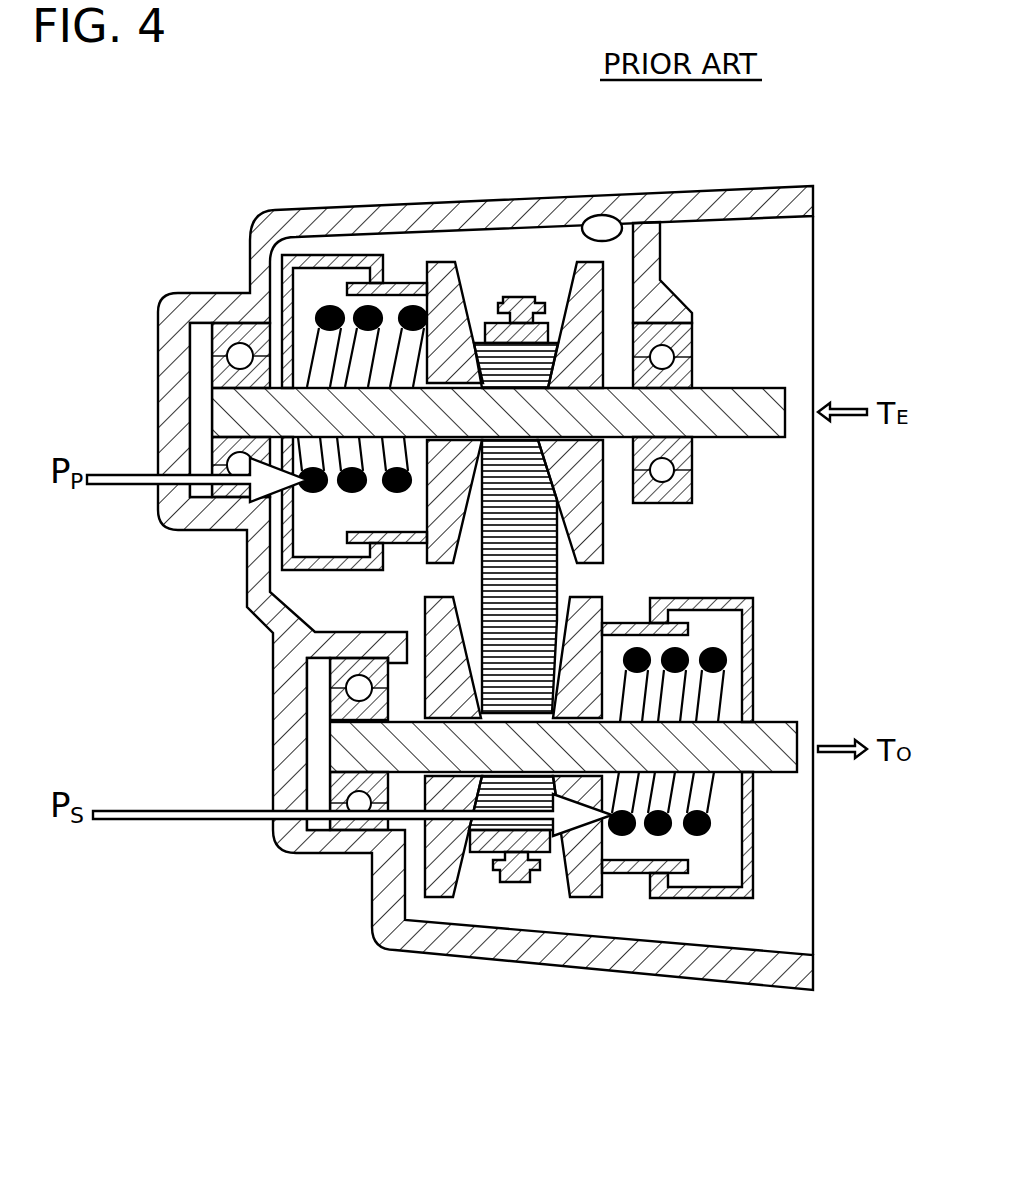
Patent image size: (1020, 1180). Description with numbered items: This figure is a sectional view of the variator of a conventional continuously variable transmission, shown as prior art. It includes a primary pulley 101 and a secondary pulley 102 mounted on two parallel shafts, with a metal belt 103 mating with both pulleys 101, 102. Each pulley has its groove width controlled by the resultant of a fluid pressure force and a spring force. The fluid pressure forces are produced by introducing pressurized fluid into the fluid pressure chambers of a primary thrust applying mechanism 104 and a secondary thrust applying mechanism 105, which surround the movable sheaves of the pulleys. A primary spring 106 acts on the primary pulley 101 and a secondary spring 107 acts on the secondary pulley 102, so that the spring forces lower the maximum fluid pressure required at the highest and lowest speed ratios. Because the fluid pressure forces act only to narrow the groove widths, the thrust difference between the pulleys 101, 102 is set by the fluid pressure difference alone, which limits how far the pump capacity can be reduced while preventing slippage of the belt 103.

The primary pulley 101 is at (470, 276).
The secondary pulley 102 is at (463, 897).
The metal belt 103 is at (538, 585).
The primary thrust applying mechanism 104 is at (334, 247).
The secondary thrust applying mechanism 105 is at (716, 906).
The primary spring 106 is at (322, 312).
The secondary spring 107 is at (707, 833).